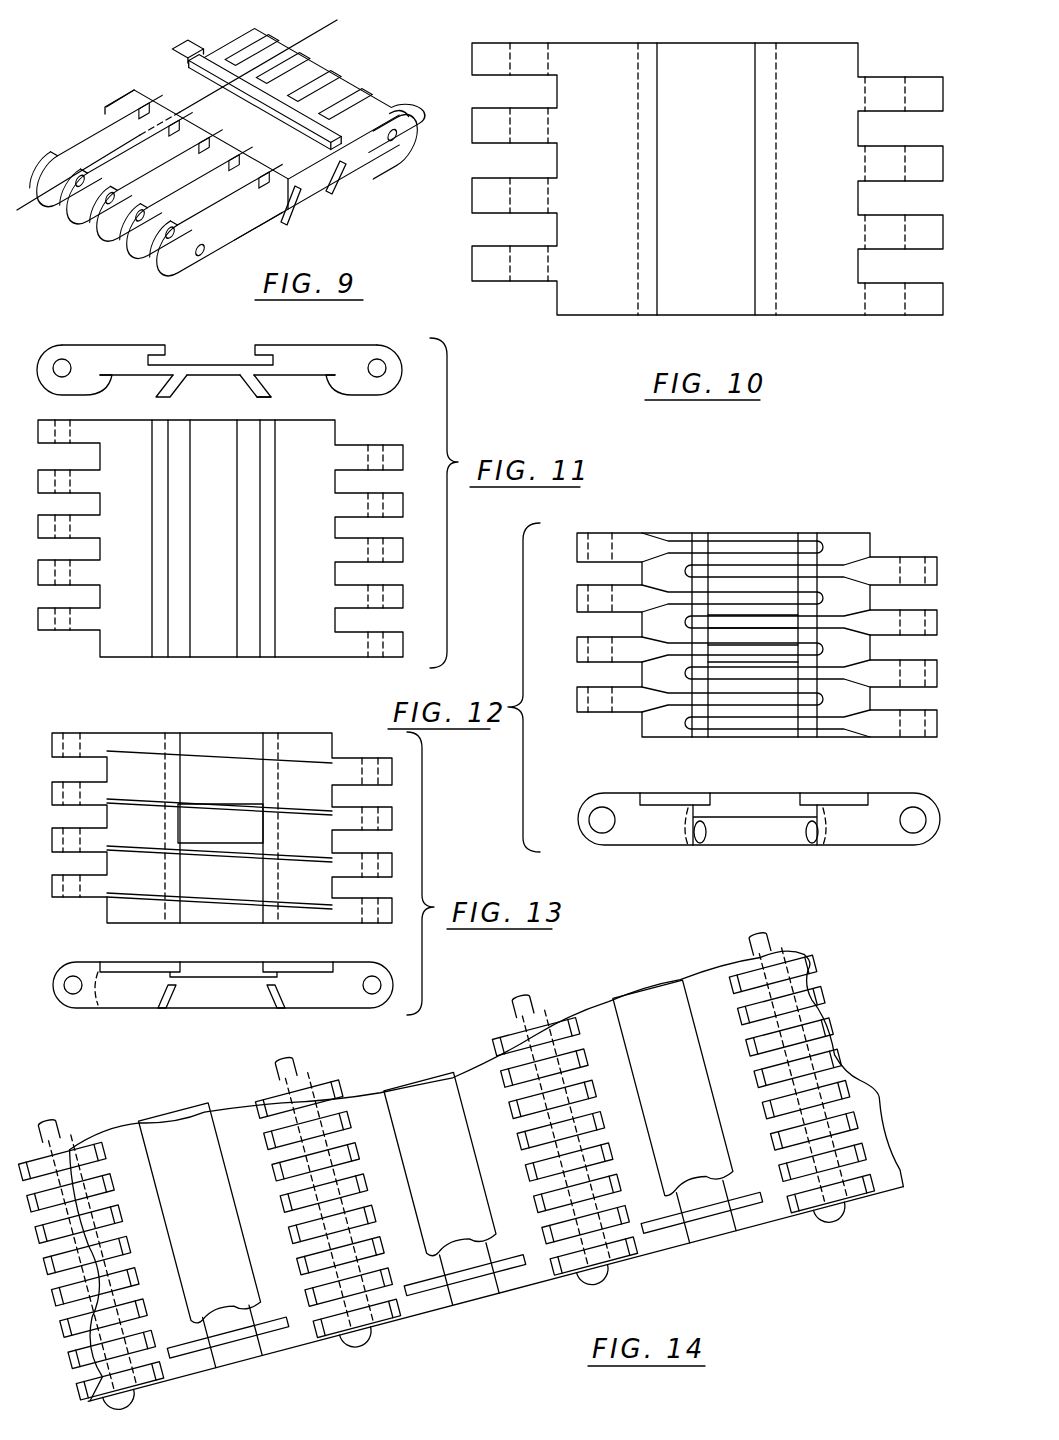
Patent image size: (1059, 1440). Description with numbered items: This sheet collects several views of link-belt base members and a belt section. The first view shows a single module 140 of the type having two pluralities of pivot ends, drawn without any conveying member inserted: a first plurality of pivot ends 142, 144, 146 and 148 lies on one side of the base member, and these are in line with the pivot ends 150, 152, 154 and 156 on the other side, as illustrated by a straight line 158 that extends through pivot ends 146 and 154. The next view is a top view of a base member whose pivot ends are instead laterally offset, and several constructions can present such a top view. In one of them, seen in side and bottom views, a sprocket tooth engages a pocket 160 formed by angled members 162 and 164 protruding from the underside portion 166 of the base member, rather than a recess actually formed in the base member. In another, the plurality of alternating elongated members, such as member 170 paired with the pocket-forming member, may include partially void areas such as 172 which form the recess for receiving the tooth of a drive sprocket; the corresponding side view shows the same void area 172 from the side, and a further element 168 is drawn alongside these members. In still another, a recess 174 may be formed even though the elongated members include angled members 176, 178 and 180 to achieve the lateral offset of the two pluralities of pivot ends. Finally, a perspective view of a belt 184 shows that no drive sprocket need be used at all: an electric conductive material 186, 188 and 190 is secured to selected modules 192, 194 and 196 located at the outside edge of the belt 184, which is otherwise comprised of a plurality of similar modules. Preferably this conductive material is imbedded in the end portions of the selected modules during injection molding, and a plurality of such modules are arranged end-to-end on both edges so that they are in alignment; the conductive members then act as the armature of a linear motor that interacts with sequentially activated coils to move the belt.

In FIG. 9, the module 140 is at (328, 204).
In FIG. 9, the pivot end 142 is at (395, 154).
In FIG. 9, the pivot end 144 is at (352, 88).
In FIG. 9, the pivot end 146 is at (292, 52).
In FIG. 9, the pivot end 148 is at (253, 34).
In FIG. 9, the pivot end 150 is at (182, 255).
In FIG. 9, the pivot end 152 is at (112, 218).
In FIG. 9, the pivot end 154 is at (82, 203).
In FIG. 9, the pivot end 156 is at (70, 143).
In FIG. 9, the straight line 158 is at (20, 212).
In FIG. 11, the pocket 160 is at (255, 396).
In FIG. 11, the angled member 162 is at (164, 392).
In FIG. 11, the angled member 164 is at (270, 390).
In FIG. 11, the underside portion 166 is at (108, 348).
In FIG. 12, the right contact pins 168 is at (838, 628).
In FIG. 12, the elongated member 170 is at (668, 644).
In FIG. 12, the partially void area 172 is at (724, 634).
In FIG. 13, the recess 174 is at (235, 830).
In FIG. 13, the angled member 176 is at (136, 748).
In FIG. 13, the contact strip 178 is at (117, 782).
In FIG. 13, the angled member 180 is at (125, 832).
In FIG. 14, the belt 184 is at (610, 992).
In FIG. 13, the electric conductive material 186 is at (125, 875).
In FIG. 14, the electric conductive material 186 is at (186, 1345).
In FIG. 14, the electric conductive material 188 is at (427, 1290).
In FIG. 14, the electric conductive material 190 is at (680, 1222).
In FIG. 14, the module 192 is at (158, 1257).
In FIG. 14, the module 194 is at (423, 1249).
In FIG. 14, the module 196 is at (648, 1163).